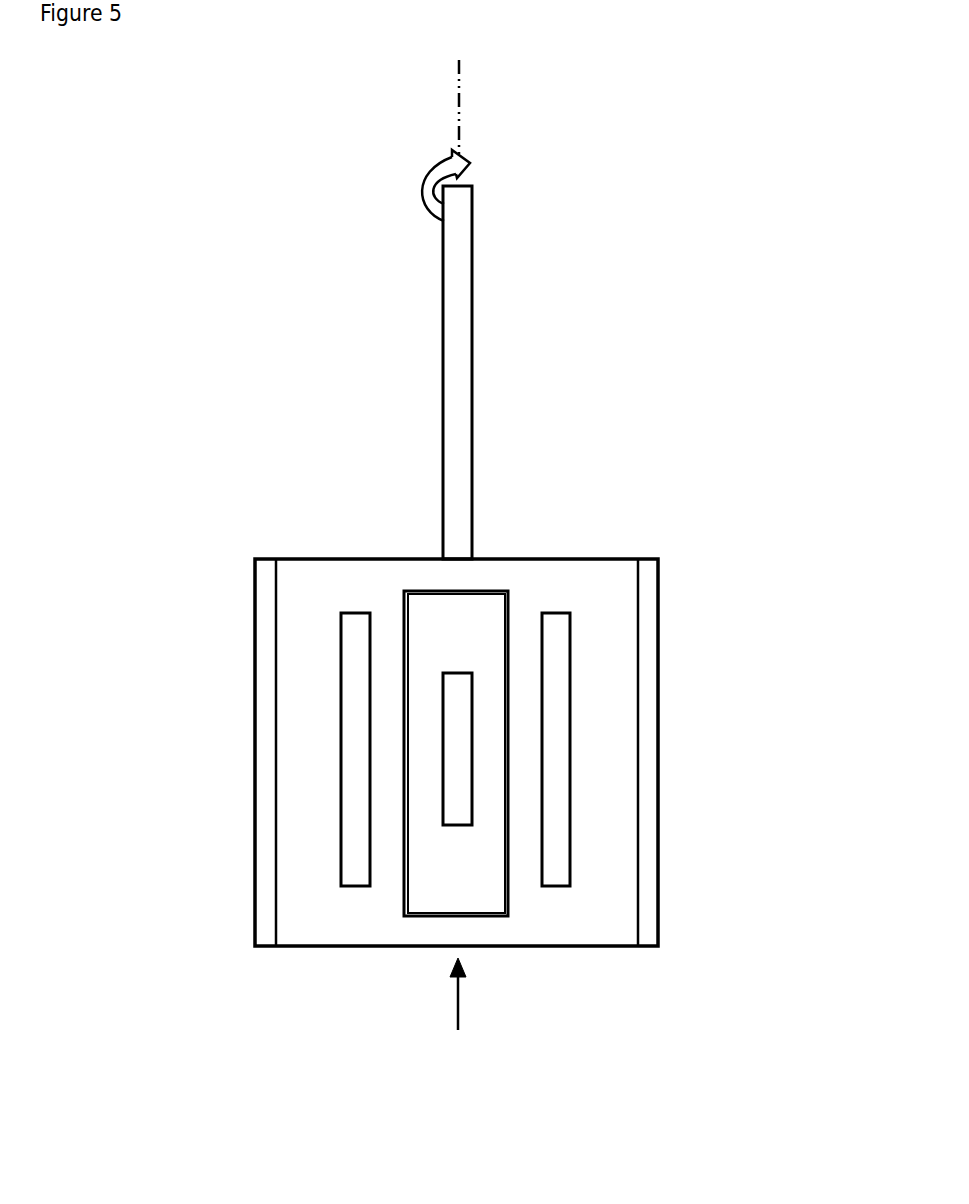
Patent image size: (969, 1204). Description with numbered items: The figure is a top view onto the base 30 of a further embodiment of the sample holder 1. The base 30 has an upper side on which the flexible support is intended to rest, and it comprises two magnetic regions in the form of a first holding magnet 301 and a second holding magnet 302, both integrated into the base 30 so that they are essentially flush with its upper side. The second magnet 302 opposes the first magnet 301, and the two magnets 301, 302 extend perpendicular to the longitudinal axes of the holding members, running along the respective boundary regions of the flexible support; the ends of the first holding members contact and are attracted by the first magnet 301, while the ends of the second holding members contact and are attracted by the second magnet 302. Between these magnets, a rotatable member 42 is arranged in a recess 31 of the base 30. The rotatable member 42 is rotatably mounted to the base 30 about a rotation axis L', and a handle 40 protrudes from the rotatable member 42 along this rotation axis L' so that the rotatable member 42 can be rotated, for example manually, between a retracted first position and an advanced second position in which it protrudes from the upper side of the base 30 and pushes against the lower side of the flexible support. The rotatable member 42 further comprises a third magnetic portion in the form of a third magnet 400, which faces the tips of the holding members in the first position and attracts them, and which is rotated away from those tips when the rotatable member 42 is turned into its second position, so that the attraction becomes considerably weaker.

The sample holder 1 is at (255, 467).
The base 30 is at (716, 712).
The first holding magnet 301 is at (357, 677).
The second holding magnet 302 is at (553, 677).
The recess 31 is at (405, 893).
The handle 40 is at (472, 204).
The third magnet 400 is at (457, 719).
The rotatable member 42 is at (470, 885).
The rotation axis L' is at (537, 109).